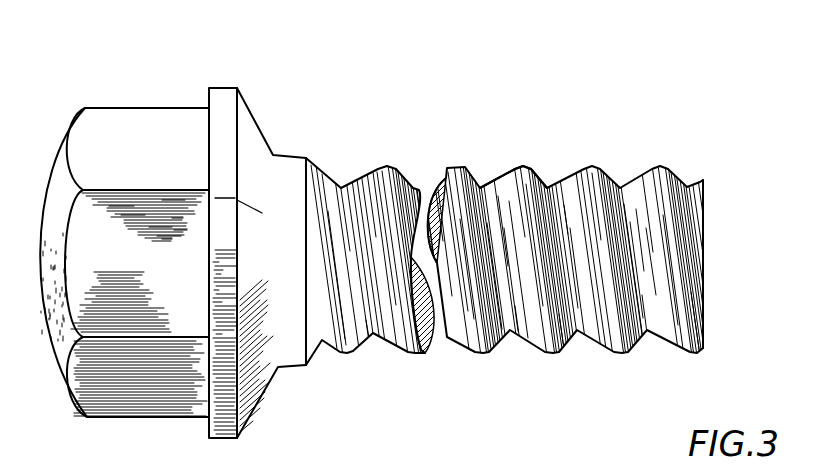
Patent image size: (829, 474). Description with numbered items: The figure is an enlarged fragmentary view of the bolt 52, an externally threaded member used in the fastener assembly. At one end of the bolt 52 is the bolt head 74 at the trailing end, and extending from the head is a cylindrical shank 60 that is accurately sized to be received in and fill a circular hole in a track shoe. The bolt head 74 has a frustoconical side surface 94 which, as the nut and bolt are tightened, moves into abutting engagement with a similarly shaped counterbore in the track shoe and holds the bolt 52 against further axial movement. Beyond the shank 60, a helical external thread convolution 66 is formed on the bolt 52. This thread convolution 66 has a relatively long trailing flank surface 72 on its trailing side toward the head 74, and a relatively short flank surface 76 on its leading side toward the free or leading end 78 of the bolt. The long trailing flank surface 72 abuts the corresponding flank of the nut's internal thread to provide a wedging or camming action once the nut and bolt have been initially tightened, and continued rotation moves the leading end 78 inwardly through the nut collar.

The bolt 52 is at (419, 225).
The bolt head 74 is at (150, 98).
The frustoconical side surface 94 is at (253, 113).
The cylindrical shank 60 is at (288, 163).
The trailing flank surface 72 is at (498, 177).
The external thread convolution 66 is at (532, 159).
The short flank surface 76 is at (547, 177).
The leading end 78 is at (705, 230).